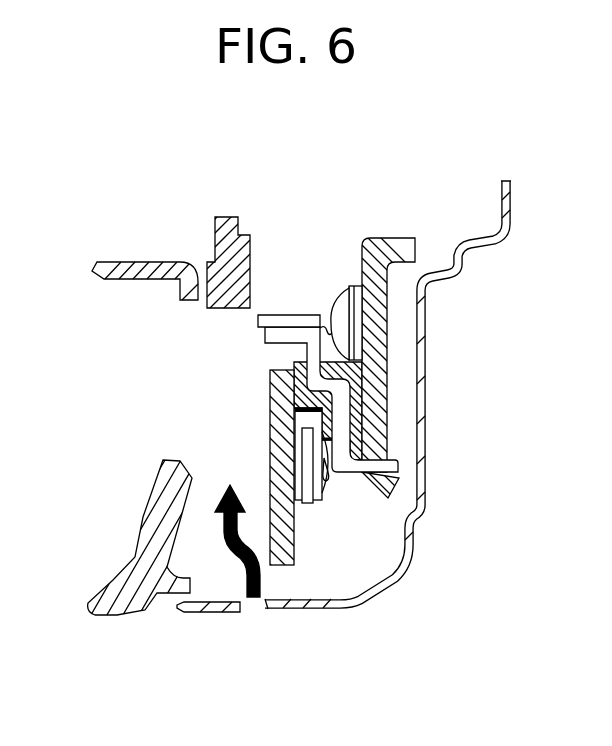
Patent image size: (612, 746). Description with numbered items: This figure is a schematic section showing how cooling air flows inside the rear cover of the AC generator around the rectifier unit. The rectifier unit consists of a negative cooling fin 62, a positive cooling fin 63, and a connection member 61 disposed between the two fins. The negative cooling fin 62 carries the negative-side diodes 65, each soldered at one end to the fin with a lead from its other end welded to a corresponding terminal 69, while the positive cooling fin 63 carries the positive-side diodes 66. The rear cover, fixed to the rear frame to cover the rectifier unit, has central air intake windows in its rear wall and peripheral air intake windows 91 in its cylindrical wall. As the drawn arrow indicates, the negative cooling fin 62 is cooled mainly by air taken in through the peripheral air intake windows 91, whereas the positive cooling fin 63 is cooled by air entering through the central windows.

The connection member 61 is at (305, 360).
The negative cooling fin 62 is at (288, 530).
The positive cooling fin 63 is at (393, 248).
The negative-side diode 65 is at (323, 478).
The positive-side diode 66 is at (337, 307).
The terminal 69 is at (352, 414).
The peripheral air intake window 91 is at (250, 607).